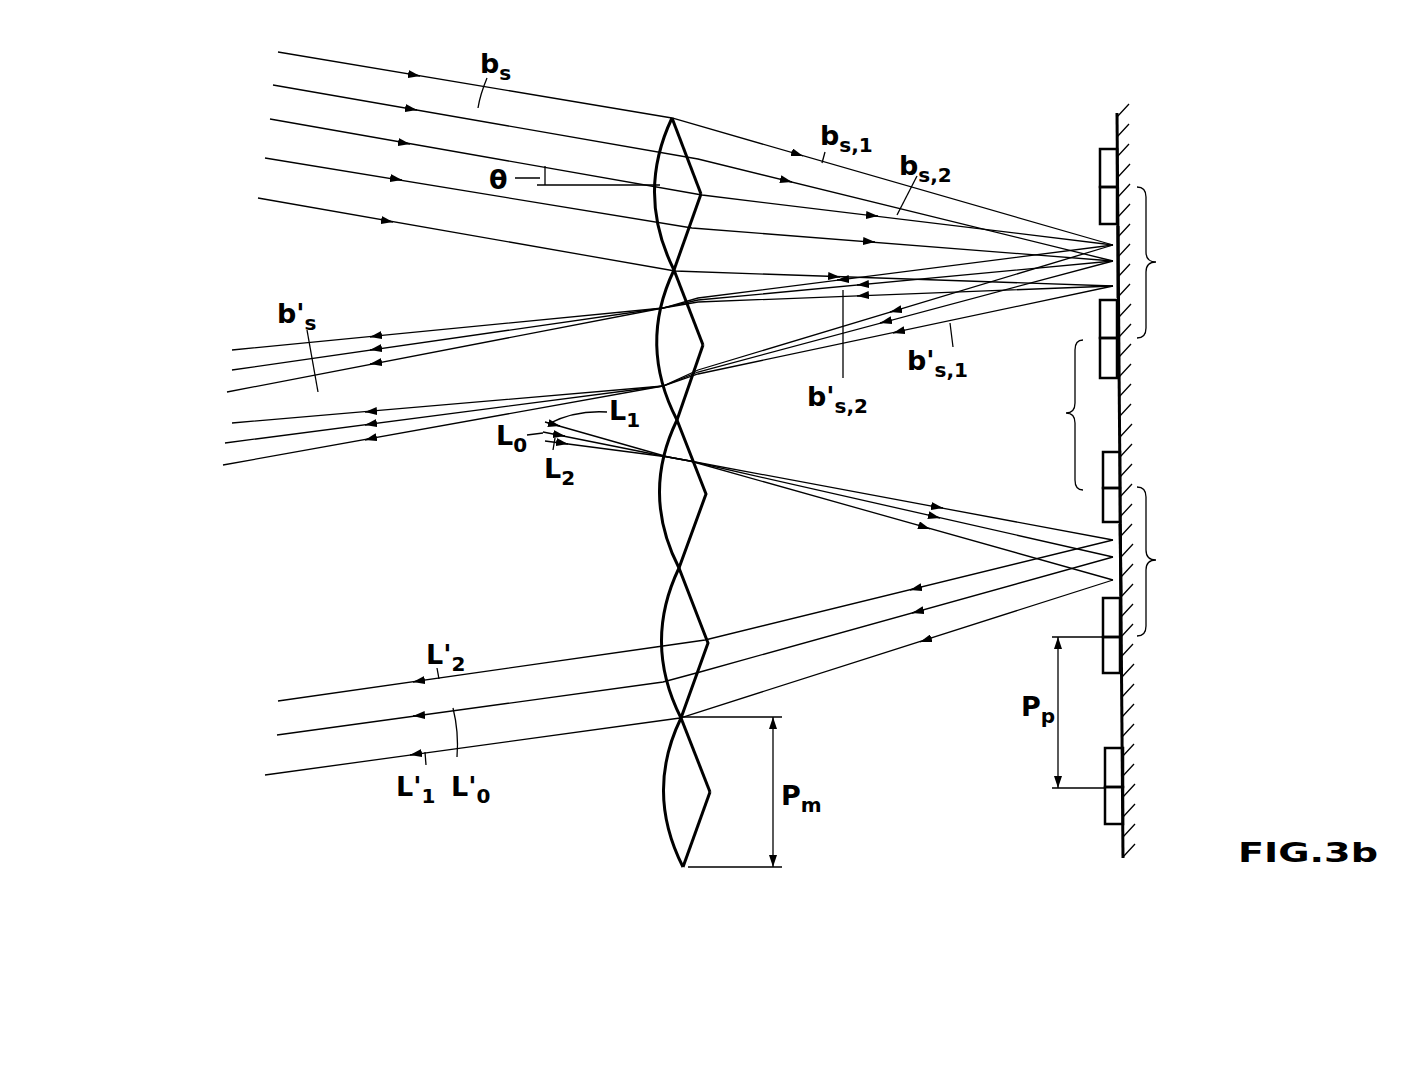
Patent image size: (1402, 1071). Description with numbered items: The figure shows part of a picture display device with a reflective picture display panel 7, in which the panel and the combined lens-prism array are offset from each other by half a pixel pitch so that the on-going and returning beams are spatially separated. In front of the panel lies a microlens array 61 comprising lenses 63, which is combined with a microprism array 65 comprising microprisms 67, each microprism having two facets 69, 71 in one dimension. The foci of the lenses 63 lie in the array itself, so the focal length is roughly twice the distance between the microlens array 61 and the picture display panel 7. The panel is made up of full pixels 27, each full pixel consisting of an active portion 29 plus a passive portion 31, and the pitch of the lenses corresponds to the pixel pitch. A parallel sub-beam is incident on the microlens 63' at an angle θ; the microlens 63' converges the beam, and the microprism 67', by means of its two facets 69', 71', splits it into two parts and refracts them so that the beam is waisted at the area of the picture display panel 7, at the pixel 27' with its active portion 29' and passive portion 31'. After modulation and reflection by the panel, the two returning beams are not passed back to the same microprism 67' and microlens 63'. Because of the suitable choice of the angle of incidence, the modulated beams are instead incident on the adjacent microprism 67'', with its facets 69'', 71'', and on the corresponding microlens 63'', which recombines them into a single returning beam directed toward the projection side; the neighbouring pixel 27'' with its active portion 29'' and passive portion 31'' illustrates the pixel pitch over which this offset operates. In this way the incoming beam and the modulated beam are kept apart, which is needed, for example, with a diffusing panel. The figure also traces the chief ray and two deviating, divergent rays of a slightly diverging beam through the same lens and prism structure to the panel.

The microlens array 61 is at (645, 833).
The microprism array 65 is at (702, 842).
The microlens 63 is at (651, 792).
The microlens 63' is at (646, 169).
The microlens 63'' is at (637, 345).
The microprism 67 is at (715, 792).
The microprism 67' is at (683, 190).
The microprism 67'' is at (735, 345).
The facet 69 is at (715, 829).
The facet 69' is at (649, 245).
The facet 69'' is at (715, 382).
The facet 71 is at (715, 755).
The facet 71' is at (694, 138).
The facet 71'' is at (712, 308).
The picture display panel 7 is at (1082, 822).
The active portion 29 is at (1087, 474).
The active portion 29' is at (1078, 238).
The active portion 29'' is at (1080, 538).
The passive portion 31 is at (1144, 340).
The passive portion 31' is at (1079, 174).
The passive portion 31'' is at (1053, 635).
The pixel 27 is at (1059, 415).
The pixel 27' is at (1165, 262).
The pixel 27'' is at (1168, 561).